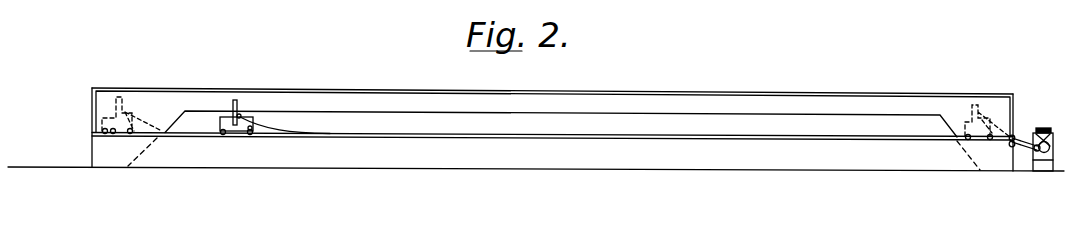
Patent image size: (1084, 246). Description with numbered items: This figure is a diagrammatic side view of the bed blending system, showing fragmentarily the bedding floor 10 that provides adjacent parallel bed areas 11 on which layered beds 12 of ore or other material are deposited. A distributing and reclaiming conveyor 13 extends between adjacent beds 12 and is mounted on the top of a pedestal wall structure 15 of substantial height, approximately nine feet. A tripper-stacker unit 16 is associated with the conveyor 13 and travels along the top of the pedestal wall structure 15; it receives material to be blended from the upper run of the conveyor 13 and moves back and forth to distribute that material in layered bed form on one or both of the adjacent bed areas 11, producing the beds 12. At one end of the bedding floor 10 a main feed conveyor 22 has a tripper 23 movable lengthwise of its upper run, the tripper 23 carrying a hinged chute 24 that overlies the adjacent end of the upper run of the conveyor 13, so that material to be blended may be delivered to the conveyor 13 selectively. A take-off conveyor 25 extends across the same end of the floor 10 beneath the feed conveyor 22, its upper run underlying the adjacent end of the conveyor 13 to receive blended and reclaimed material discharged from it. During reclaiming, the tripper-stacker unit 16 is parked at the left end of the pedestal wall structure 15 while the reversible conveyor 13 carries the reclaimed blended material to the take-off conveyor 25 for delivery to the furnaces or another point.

The bedding floor 10 is at (703, 165).
The bed area 11 is at (505, 163).
The bed of layered material 12 is at (594, 113).
The distributing and reclaiming conveyor 13 is at (378, 128).
The pedestal wall structure 15 is at (220, 158).
The tripper-stacker unit 16 is at (229, 117).
The main feed conveyor 22 is at (1050, 130).
The tripper 23 is at (1040, 128).
The hinged chute 24 is at (1043, 141).
The take-off conveyor 25 is at (1046, 160).